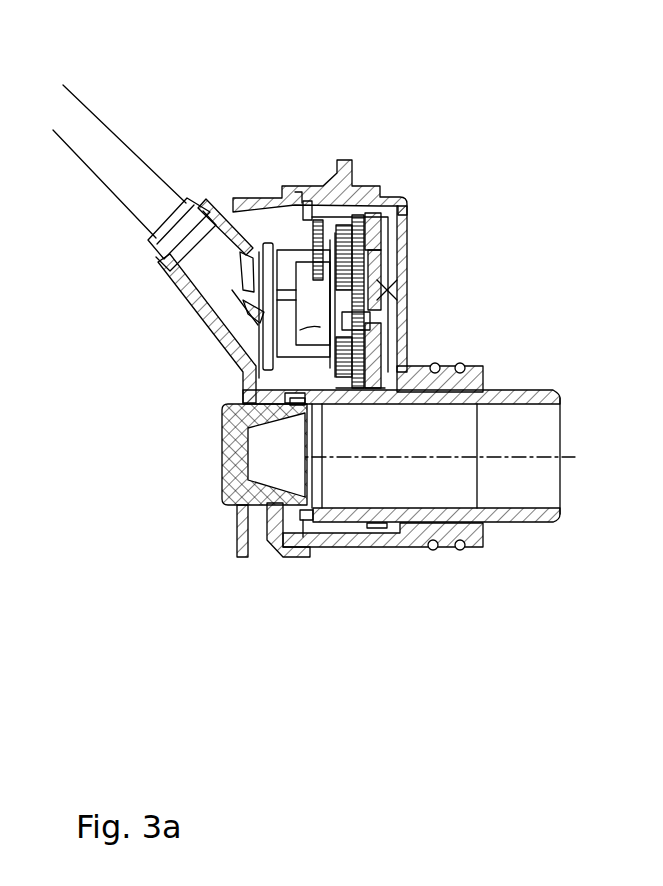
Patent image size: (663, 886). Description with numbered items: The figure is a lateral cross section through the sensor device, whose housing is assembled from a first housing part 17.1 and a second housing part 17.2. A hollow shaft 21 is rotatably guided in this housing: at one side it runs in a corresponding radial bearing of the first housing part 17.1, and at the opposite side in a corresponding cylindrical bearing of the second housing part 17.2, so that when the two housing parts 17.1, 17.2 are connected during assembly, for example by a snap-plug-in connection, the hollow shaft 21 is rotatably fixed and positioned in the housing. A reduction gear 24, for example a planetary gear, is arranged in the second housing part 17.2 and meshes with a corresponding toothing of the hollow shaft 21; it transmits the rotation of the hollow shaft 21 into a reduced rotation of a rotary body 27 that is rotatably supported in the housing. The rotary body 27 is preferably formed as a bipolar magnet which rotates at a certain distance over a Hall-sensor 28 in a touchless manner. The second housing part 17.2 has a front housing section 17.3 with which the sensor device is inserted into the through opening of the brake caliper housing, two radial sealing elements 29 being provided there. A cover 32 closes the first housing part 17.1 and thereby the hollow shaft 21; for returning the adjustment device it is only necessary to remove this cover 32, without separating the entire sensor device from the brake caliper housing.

The first housing part 17.1 is at (220, 203).
The second housing part 17.2 is at (317, 195).
The front housing section 17.3 is at (418, 547).
The hollow shaft 21 is at (497, 433).
The reduction gear 24 is at (355, 213).
The rotary body 27 is at (383, 296).
The Hall-sensor 28 is at (280, 322).
The radial sealing elements 29 is at (460, 548).
The cover 32 is at (237, 463).